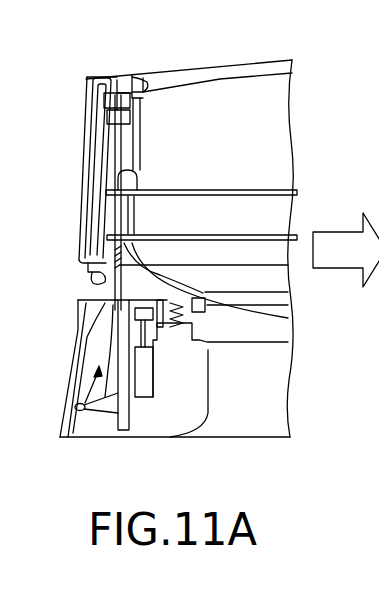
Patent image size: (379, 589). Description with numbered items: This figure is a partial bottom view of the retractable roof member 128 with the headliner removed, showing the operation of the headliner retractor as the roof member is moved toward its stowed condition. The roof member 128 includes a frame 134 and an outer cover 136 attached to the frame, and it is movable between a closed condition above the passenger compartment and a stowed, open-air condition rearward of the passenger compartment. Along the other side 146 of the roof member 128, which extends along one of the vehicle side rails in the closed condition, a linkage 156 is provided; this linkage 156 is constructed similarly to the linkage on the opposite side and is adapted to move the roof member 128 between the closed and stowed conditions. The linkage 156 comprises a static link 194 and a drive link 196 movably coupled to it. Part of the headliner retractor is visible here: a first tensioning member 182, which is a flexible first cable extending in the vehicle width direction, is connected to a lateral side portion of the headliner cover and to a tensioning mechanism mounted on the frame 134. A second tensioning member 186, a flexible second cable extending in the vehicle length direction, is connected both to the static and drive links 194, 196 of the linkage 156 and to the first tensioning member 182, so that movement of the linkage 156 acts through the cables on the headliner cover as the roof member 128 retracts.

The retractable roof member 128 is at (270, 117).
The frame 134 is at (233, 67).
The outer cover 136 is at (250, 88).
The other side of the roof member 146 is at (150, 92).
The static link 194 is at (135, 127).
The second tensioning member 186 is at (120, 153).
The first tensioning member 182 is at (265, 190).
The drive link 196 is at (95, 290).
The linkage 156 is at (96, 415).